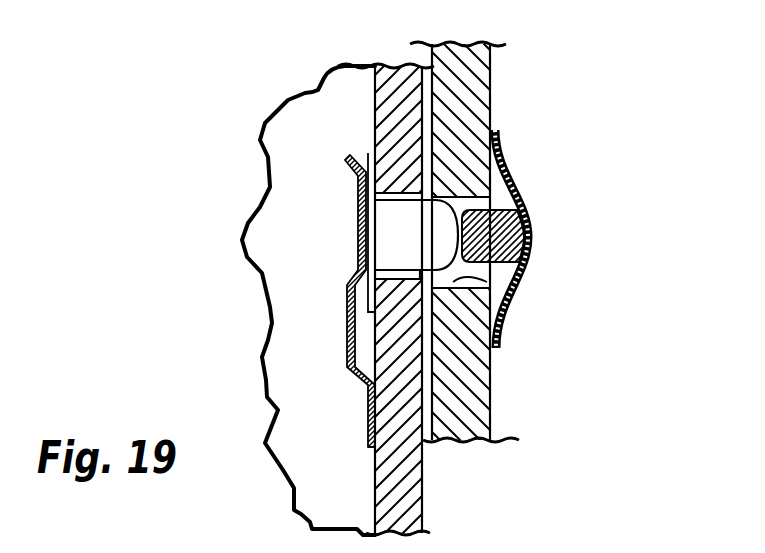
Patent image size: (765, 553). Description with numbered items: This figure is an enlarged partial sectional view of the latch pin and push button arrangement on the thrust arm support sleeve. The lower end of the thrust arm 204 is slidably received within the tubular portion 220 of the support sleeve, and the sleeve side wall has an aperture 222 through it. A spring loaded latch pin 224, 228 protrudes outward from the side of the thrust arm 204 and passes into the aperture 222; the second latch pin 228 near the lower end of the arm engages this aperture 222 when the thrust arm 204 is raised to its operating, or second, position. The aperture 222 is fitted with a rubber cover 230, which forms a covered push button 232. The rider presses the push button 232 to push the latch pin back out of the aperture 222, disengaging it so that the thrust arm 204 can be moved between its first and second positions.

The thrust arm 204 is at (420, 467).
The tubular portion 220 is at (490, 380).
The aperture 222 is at (487, 282).
The first latch pin 224 is at (513, 161).
The second latch pin 228 is at (420, 212).
The rubber cover 230 is at (512, 183).
The push button 232 is at (533, 240).